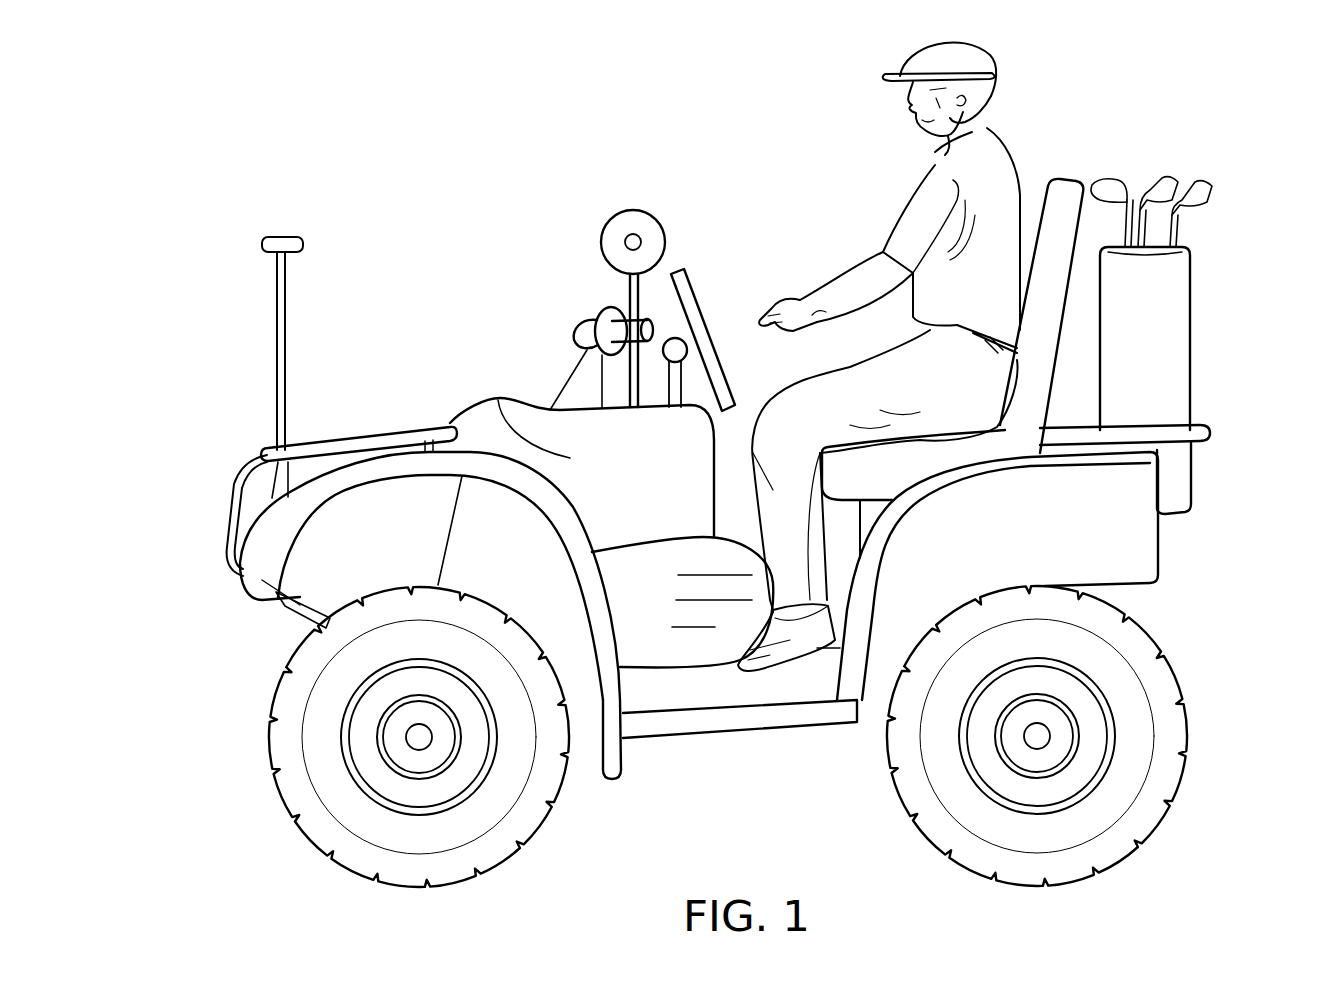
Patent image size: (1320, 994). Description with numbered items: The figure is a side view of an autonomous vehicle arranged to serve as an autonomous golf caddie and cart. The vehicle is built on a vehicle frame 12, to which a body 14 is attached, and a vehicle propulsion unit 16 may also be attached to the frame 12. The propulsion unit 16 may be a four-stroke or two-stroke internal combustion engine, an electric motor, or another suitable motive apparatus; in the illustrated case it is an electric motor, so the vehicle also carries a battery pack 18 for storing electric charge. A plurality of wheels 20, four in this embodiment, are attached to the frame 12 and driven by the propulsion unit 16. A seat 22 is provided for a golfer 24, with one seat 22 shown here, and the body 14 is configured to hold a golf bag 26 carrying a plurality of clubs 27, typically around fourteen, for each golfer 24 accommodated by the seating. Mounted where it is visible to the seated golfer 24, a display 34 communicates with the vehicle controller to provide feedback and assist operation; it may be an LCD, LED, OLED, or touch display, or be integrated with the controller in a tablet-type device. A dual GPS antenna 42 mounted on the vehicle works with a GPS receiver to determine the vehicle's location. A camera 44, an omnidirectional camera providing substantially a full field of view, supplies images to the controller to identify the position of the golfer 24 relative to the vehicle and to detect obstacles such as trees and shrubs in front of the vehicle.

The vehicle frame 12 is at (300, 606).
The body 14 is at (545, 440).
The vehicle propulsion unit 16 is at (620, 776).
The battery pack 18 is at (707, 650).
The wheels 20 is at (268, 762).
The seat 22 is at (1062, 185).
The golfer 24 is at (985, 48).
The golf bag 26 is at (1185, 330).
The clubs 27 is at (1216, 190).
The display 34 is at (693, 290).
The dual GPS antenna 42 is at (264, 243).
The camera 44 is at (655, 222).